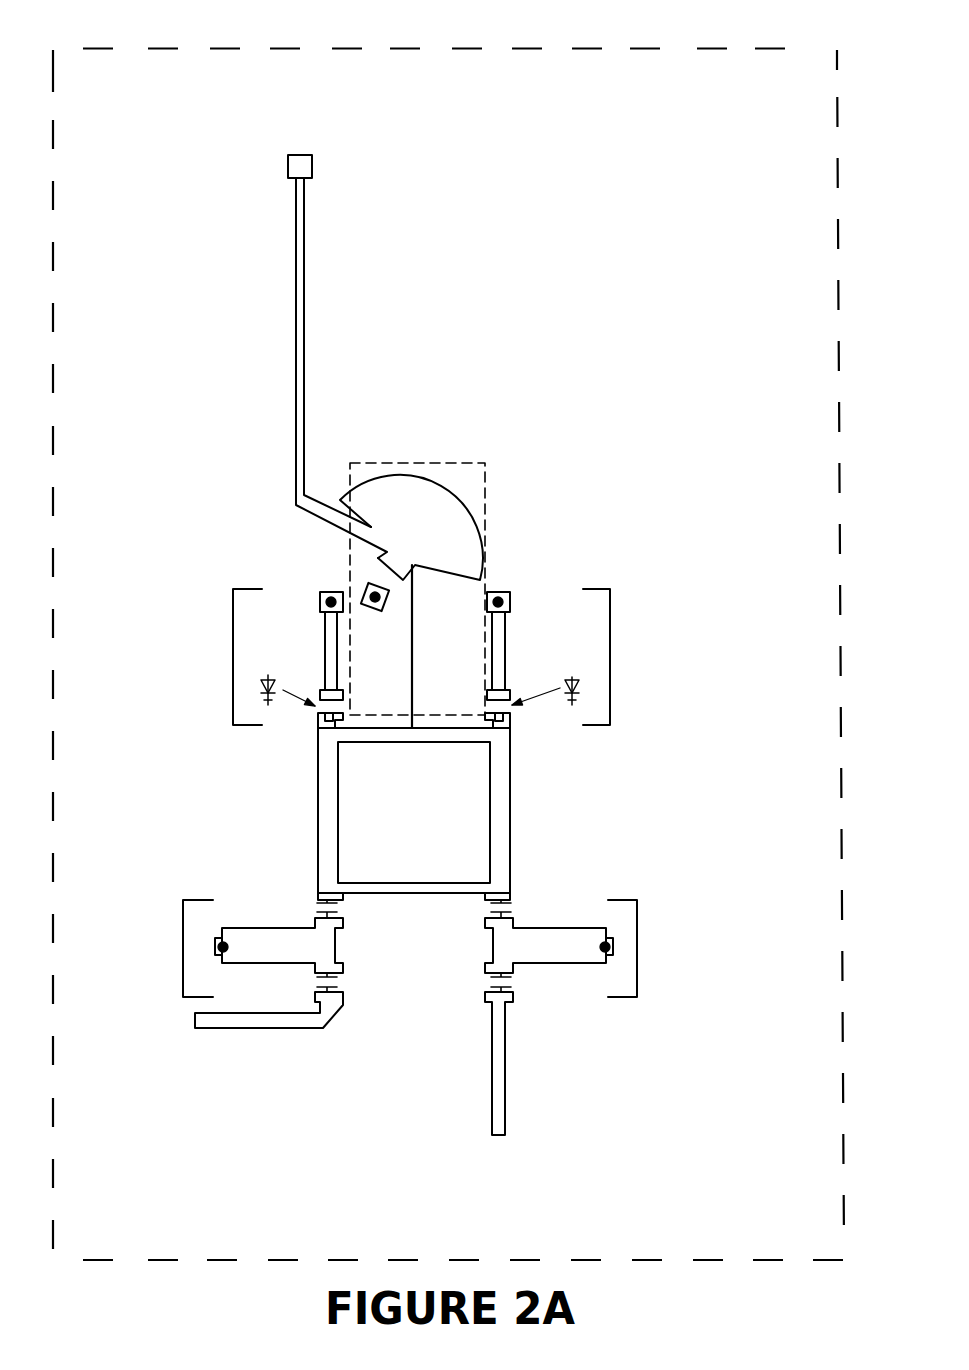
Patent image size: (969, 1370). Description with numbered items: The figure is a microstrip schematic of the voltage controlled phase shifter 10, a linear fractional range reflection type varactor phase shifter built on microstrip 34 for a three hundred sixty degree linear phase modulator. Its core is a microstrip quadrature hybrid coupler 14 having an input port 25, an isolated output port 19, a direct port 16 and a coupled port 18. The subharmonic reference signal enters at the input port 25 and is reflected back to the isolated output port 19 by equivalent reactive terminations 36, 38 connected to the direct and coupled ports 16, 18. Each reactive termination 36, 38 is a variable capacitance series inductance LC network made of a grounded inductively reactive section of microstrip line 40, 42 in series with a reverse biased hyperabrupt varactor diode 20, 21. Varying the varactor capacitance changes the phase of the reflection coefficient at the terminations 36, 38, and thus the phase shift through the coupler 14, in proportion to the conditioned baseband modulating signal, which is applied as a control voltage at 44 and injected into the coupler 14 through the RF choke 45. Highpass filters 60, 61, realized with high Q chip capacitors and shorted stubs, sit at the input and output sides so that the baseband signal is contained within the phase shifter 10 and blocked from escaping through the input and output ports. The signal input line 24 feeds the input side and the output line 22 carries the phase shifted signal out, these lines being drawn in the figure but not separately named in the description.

The voltage controlled phase shifter 10 is at (462, 48).
The baseband signal injection point 44 is at (290, 160).
The RF choke 45 is at (455, 462).
The inductively reactive section of microstrip line 42 is at (320, 650).
The inductively reactive section of microstrip line 40 is at (508, 637).
The reactive termination 38 is at (233, 628).
The reactive termination 36 is at (612, 645).
The varactor diode 21 is at (258, 683).
The varactor diode 20 is at (572, 676).
The coupled port 18 is at (318, 718).
The direct port 16 is at (510, 720).
The microstrip quadrature hybrid coupler 14 is at (511, 797).
The microstrip 34 is at (511, 850).
The isolated output port 19 is at (315, 893).
The input port 25 is at (510, 893).
The highpass filter 61 is at (183, 912).
The highpass filter 60 is at (637, 990).
The output line 22 is at (195, 1028).
The input line 24 is at (492, 1135).